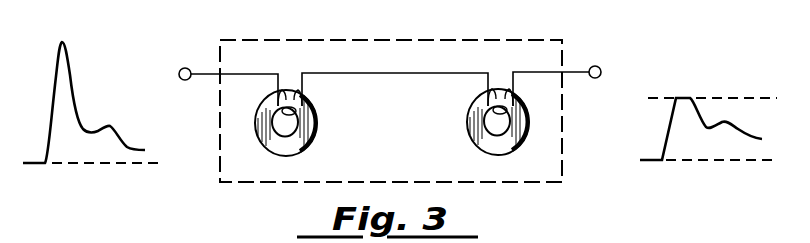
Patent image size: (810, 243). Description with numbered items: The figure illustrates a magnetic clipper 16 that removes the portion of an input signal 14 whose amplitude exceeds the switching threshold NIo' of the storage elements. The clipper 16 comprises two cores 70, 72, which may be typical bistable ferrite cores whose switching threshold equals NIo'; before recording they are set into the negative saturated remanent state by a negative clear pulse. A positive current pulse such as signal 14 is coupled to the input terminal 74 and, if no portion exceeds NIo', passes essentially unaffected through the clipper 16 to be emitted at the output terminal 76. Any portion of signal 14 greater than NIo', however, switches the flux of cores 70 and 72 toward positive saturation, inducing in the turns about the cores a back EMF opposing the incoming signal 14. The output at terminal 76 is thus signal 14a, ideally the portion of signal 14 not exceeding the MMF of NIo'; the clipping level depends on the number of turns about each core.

The input signal 14 is at (73, 95).
The output signal 14a is at (738, 125).
The clipper 16 is at (433, 40).
The core 70 is at (318, 114).
The core 72 is at (468, 114).
The input terminal 74 is at (183, 68).
The output terminal 76 is at (597, 66).